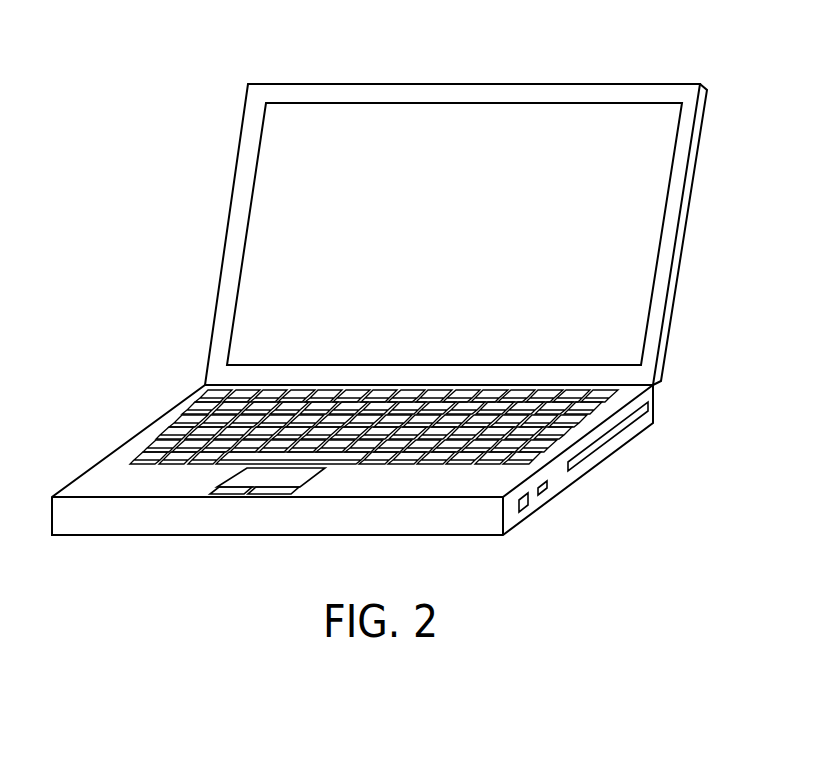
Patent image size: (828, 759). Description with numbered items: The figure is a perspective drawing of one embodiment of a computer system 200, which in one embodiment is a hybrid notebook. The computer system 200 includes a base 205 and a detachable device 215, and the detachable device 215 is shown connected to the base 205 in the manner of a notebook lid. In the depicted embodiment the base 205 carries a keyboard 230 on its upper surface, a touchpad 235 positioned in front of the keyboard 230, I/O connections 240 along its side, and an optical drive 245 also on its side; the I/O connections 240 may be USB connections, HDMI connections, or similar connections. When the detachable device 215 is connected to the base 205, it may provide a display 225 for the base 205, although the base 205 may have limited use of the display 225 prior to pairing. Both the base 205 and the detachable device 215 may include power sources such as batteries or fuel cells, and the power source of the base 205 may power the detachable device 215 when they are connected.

The computer system 200 is at (116, 147).
The base 205 is at (148, 424).
The detachable device 215 is at (232, 240).
The display 225 is at (250, 289).
The keyboard 230 is at (213, 400).
The touchpad 235 is at (247, 477).
The I/O connections 240 is at (547, 482).
The optical drive 245 is at (649, 404).